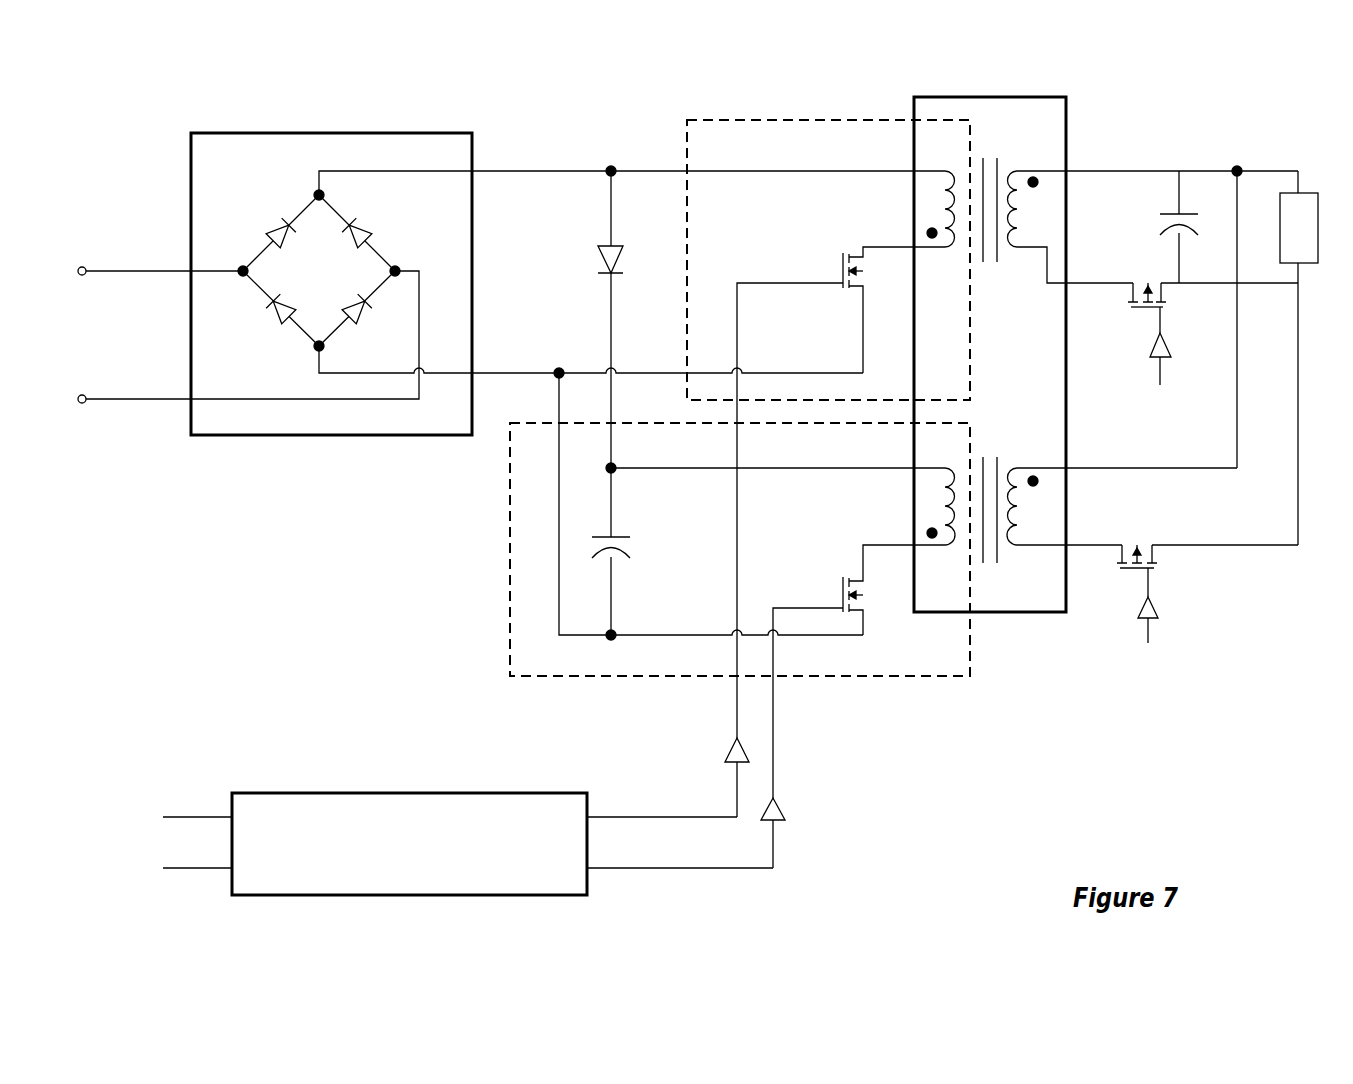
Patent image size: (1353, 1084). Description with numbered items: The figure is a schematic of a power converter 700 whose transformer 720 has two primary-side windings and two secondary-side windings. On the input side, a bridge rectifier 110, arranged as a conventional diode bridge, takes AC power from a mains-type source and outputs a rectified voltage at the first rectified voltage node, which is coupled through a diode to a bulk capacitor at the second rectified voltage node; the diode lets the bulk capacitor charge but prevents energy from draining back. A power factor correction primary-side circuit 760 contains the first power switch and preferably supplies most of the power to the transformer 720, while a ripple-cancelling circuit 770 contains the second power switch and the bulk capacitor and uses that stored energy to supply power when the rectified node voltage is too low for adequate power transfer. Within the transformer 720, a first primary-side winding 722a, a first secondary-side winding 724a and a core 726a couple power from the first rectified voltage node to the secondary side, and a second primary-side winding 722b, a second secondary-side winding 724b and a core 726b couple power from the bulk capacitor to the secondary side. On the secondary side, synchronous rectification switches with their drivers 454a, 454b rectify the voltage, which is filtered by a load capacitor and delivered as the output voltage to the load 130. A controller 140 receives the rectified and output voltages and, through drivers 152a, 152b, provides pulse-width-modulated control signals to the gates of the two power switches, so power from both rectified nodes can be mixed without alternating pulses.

The power converter 700 is at (702, 482).
The bridge rectifier 110 is at (511, 271).
The power factor correction primary-side circuit 760 is at (828, 454).
The ripple-cancelling circuit 770 is at (736, 633).
The transformer 720 is at (1106, 340).
The first primary-side winding 722a is at (942, 196).
The first secondary-side winding 724a is at (1153, 214).
The core 726a is at (1004, 228).
The second primary-side winding 722b is at (942, 494).
The second secondary-side winding 724b is at (1122, 494).
The core 726b is at (1003, 525).
The load 130 is at (1309, 348).
The driver 454a is at (1180, 346).
The driver 454b is at (1170, 605).
The controller 140 is at (468, 833).
The driver 152a is at (718, 749).
The driver 152b is at (794, 787).